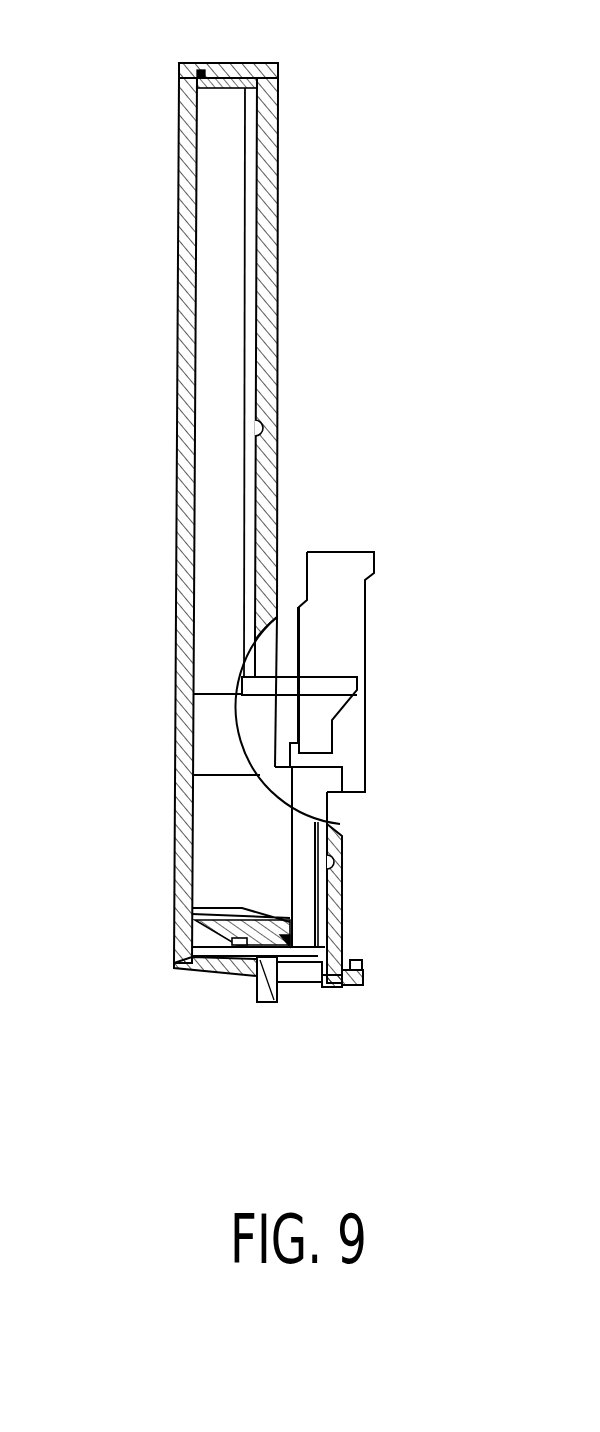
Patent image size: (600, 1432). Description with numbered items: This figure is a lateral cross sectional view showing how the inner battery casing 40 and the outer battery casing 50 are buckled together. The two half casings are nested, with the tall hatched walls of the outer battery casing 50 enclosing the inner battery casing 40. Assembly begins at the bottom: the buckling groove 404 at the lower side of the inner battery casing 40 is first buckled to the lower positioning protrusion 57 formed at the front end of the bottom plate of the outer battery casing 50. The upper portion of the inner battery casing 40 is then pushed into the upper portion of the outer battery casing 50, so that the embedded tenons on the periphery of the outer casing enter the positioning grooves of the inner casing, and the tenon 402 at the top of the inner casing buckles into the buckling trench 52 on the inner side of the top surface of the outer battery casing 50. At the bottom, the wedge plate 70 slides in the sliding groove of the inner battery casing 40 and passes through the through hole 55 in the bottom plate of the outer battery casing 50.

The inner battery casing 40 is at (295, 210).
The outer battery casing 50 is at (165, 200).
The buckling trench 52 is at (195, 65).
The through hole of the wedge plate 55 is at (303, 978).
The positioning protrusion 57 is at (333, 965).
The wedge plate 70 is at (215, 930).
The tenon 402 is at (205, 73).
The buckling groove 404 is at (336, 958).